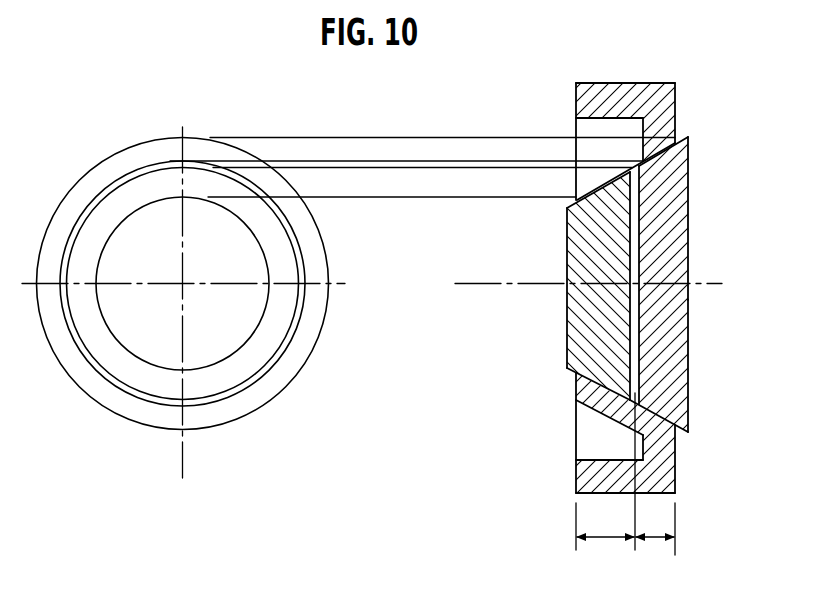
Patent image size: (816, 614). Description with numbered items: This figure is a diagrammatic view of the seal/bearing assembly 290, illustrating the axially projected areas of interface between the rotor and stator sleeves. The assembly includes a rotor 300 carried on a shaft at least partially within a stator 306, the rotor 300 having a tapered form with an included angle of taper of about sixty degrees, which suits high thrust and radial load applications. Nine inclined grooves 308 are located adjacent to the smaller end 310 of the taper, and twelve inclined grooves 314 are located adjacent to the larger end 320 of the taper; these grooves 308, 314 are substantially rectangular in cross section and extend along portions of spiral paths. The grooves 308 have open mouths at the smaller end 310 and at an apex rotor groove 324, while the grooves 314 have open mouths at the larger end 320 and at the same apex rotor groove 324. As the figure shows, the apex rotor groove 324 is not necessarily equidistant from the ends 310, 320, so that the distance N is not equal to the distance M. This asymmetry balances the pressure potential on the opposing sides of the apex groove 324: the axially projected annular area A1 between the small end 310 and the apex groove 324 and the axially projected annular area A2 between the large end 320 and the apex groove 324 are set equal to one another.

The stator 306 is at (648, 82).
The seal/bearing assembly 290 is at (684, 114).
The larger end 320 is at (689, 192).
The apex rotor groove 324 is at (633, 226).
The smaller end 310 is at (567, 238).
The inclined grooves 314 is at (681, 335).
The inclined grooves 308 is at (614, 345).
The rotor 300 is at (670, 415).
The axially projected annular area A1 is at (237, 370).
The axially projected annular area A2 is at (208, 415).
The distance from apex groove to one end M is at (617, 540).
The distance from apex groove to other end N is at (652, 540).